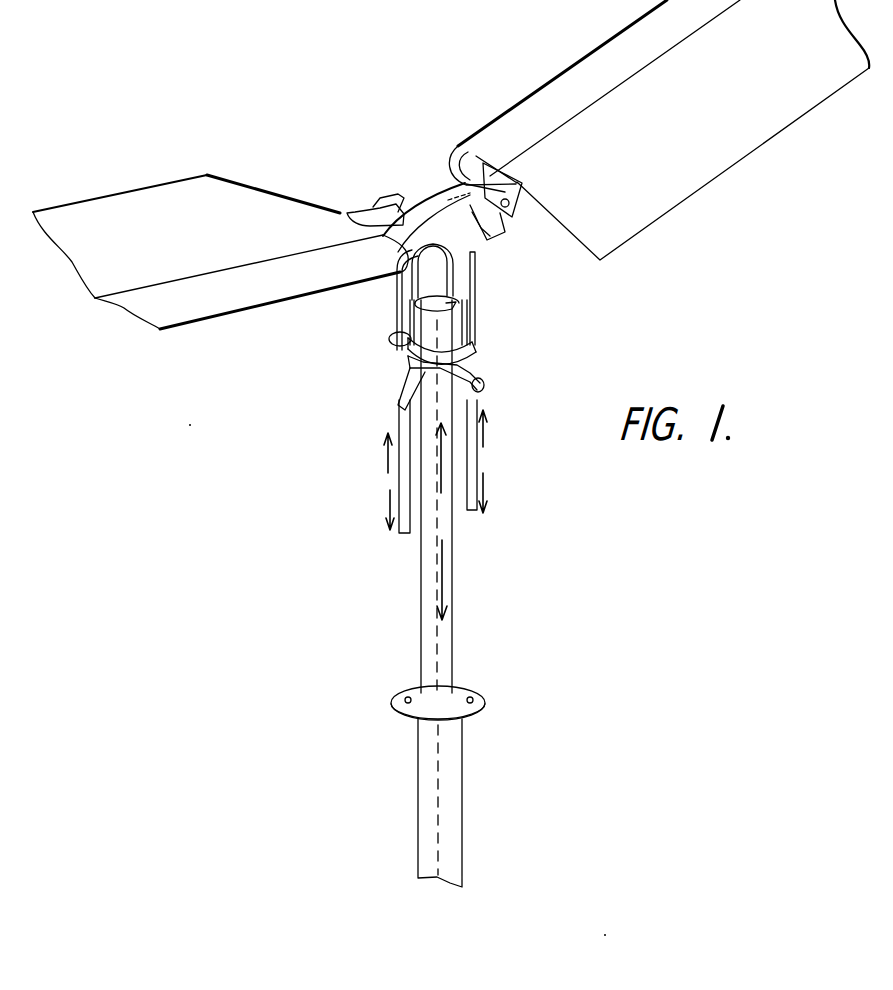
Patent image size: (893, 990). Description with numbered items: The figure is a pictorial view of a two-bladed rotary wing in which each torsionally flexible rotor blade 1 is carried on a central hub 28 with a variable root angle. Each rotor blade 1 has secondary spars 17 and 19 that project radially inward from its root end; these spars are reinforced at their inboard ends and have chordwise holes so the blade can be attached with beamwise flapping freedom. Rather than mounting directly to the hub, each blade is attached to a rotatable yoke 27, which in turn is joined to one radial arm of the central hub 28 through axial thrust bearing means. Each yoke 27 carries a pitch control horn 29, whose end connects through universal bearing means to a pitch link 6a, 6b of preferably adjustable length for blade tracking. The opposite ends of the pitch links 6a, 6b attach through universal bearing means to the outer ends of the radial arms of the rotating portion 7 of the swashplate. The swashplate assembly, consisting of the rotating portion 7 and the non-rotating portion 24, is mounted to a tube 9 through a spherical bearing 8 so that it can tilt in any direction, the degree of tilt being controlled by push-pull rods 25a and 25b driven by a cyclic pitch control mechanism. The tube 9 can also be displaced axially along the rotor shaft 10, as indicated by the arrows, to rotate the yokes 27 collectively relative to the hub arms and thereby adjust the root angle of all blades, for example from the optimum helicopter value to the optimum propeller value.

The torsionally flexible rotor blade 1 is at (560, 77).
The central hub 28 is at (423, 210).
The rotatable yoke 27 is at (452, 184).
The secondary spar 17 is at (457, 182).
The secondary spar 19 is at (512, 206).
The pitch control horn 29 is at (493, 242).
The pitch link 6a is at (481, 300).
The pitch link 6b is at (397, 303).
The rotor shaft 10 is at (447, 280).
The tube 9 is at (454, 553).
The spherical bearing 8 is at (413, 352).
The rotating portion of the swashplate 7 is at (410, 367).
The non-rotating portion of the swashplate 24 is at (485, 386).
The push-pull rod 25a is at (480, 460).
The push-pull rod 25b is at (399, 487).